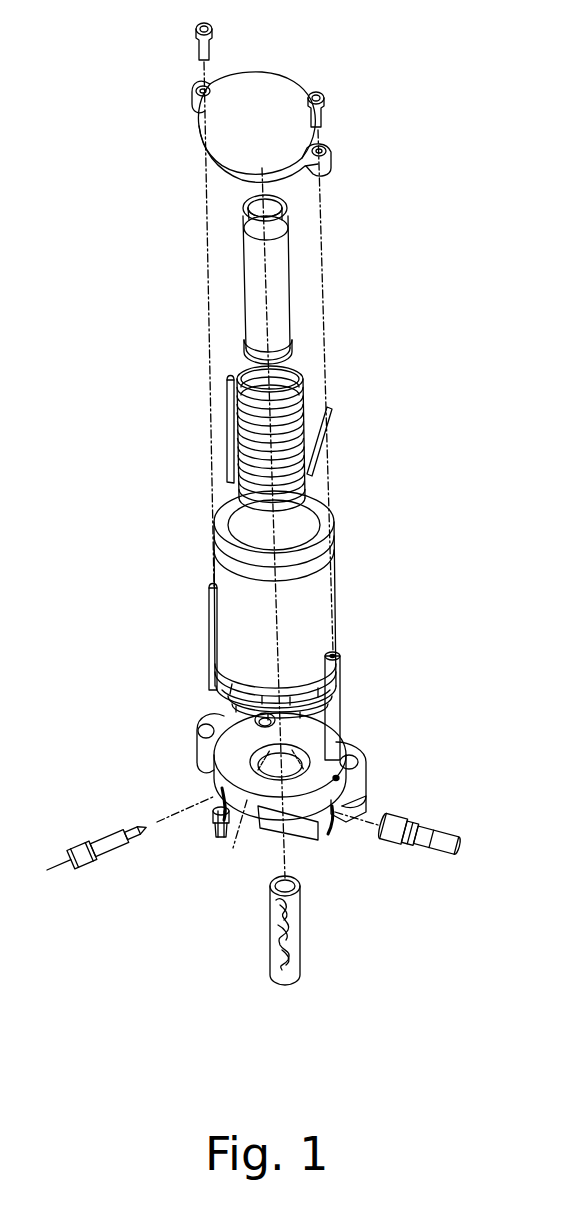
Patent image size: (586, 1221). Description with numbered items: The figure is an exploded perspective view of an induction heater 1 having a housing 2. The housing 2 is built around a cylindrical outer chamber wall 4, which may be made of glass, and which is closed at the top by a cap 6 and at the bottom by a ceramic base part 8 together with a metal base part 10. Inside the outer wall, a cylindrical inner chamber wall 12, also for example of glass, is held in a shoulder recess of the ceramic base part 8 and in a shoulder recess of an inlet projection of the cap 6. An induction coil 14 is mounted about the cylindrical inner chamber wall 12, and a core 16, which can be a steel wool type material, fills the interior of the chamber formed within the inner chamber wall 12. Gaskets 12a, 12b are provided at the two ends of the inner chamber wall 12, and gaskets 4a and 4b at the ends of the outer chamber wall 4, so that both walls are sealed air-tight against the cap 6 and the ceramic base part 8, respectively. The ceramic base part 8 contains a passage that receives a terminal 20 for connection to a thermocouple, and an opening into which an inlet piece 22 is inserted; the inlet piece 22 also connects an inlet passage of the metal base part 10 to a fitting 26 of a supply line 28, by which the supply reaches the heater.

The induction heater 1 is at (485, 373).
The housing 2 is at (213, 568).
The cylindrical outer chamber wall 4 is at (282, 629).
The gasket 4a is at (224, 521).
The gasket 4b is at (223, 672).
The cap 6 is at (259, 125).
The ceramic base part 8 is at (217, 696).
The metal base part 10 is at (203, 712).
The cylindrical inner chamber wall 12 is at (286, 270).
The gasket 12a is at (243, 204).
The gasket 12b is at (248, 350).
The induction coil 14 is at (302, 380).
The core 16 is at (301, 926).
The terminal 20 is at (103, 840).
The inlet piece 22 is at (206, 834).
The fitting 26 is at (399, 821).
The supply line 28 is at (439, 828).